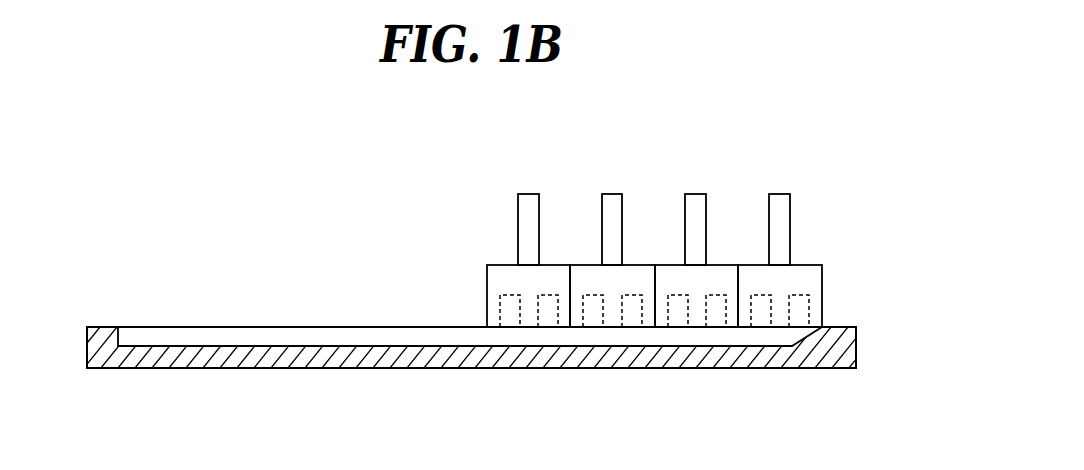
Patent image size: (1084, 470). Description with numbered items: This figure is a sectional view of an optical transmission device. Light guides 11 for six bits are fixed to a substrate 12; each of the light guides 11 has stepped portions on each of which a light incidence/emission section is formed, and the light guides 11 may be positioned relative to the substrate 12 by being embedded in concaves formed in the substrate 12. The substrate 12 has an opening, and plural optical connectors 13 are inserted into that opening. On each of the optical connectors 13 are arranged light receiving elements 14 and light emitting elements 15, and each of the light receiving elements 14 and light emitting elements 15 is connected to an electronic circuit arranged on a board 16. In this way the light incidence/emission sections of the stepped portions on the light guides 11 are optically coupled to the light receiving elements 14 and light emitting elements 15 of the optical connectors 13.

The light guide 11 is at (339, 327).
The substrate 12 is at (112, 327).
The optical connector 13 is at (822, 280).
The light receiving element 14 is at (762, 322).
The light emitting element 15 is at (795, 300).
The board 16 is at (790, 222).